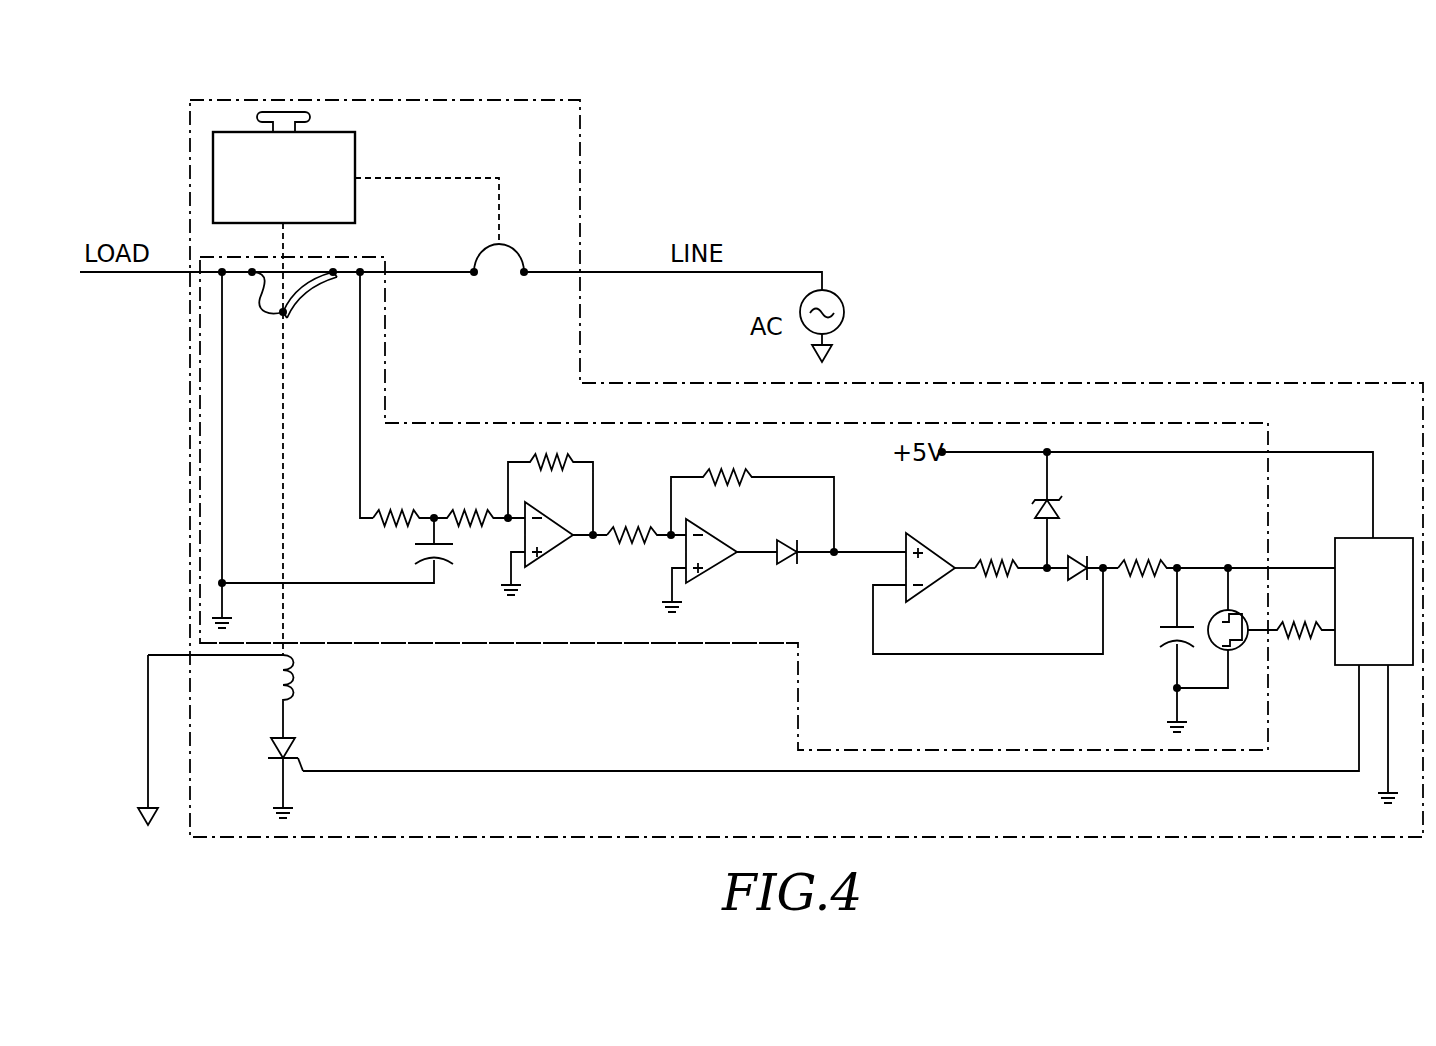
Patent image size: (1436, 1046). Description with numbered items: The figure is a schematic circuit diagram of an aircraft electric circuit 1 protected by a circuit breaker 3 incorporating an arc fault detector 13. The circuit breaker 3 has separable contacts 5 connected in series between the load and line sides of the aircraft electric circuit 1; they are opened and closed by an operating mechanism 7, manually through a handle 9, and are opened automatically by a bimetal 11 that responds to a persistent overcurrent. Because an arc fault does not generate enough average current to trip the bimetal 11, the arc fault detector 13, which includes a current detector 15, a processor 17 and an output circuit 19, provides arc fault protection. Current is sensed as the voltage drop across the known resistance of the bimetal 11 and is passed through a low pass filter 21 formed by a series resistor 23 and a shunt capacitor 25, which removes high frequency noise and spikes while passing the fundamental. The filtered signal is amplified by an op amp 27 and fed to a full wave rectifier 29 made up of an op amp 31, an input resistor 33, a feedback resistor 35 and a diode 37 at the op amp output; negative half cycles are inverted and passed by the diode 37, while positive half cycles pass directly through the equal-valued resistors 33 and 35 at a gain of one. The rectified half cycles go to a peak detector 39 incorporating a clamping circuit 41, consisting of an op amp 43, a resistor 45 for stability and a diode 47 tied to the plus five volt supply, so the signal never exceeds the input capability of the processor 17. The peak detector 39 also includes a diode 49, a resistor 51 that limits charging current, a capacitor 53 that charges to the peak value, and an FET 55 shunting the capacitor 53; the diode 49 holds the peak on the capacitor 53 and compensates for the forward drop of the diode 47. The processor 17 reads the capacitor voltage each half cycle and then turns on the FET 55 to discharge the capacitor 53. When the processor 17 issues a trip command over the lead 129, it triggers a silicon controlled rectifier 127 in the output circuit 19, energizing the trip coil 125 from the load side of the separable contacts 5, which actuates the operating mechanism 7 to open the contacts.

The aircraft electric circuit 1 is at (618, 210).
The circuit breaker 3 is at (1090, 384).
The separable contacts 5 is at (513, 246).
The operating mechanism 7 is at (356, 147).
The handle 9 is at (282, 112).
The bimetal 11 is at (310, 348).
The arc fault detector 13 is at (960, 412).
The current detector 15 is at (470, 648).
The processor 17 is at (1358, 538).
The output circuit 19 is at (277, 740).
The low pass filter 21 is at (440, 485).
The series resistor 23 is at (395, 536).
The shunt capacitor 25 is at (445, 565).
The op amp 27 is at (556, 552).
The full wave rectifier 29 is at (820, 580).
The op amp 31 is at (707, 574).
The input resistor 33 is at (617, 526).
The feedback resistor 35 is at (730, 470).
The diode 37 is at (788, 541).
The peak detector 39 is at (1008, 682).
The clamping circuit 41 is at (945, 518).
The op amp 43 is at (932, 586).
The resistor 45 is at (996, 560).
The diode 47 is at (1058, 511).
The diode 49 is at (1083, 580).
The resistor 51 is at (1145, 560).
The capacitor 53 is at (1155, 638).
The FET 55 is at (1248, 652).
The trip coil 125 is at (292, 676).
The silicon controlled rectifier 127 is at (270, 750).
The lead 129 is at (608, 771).